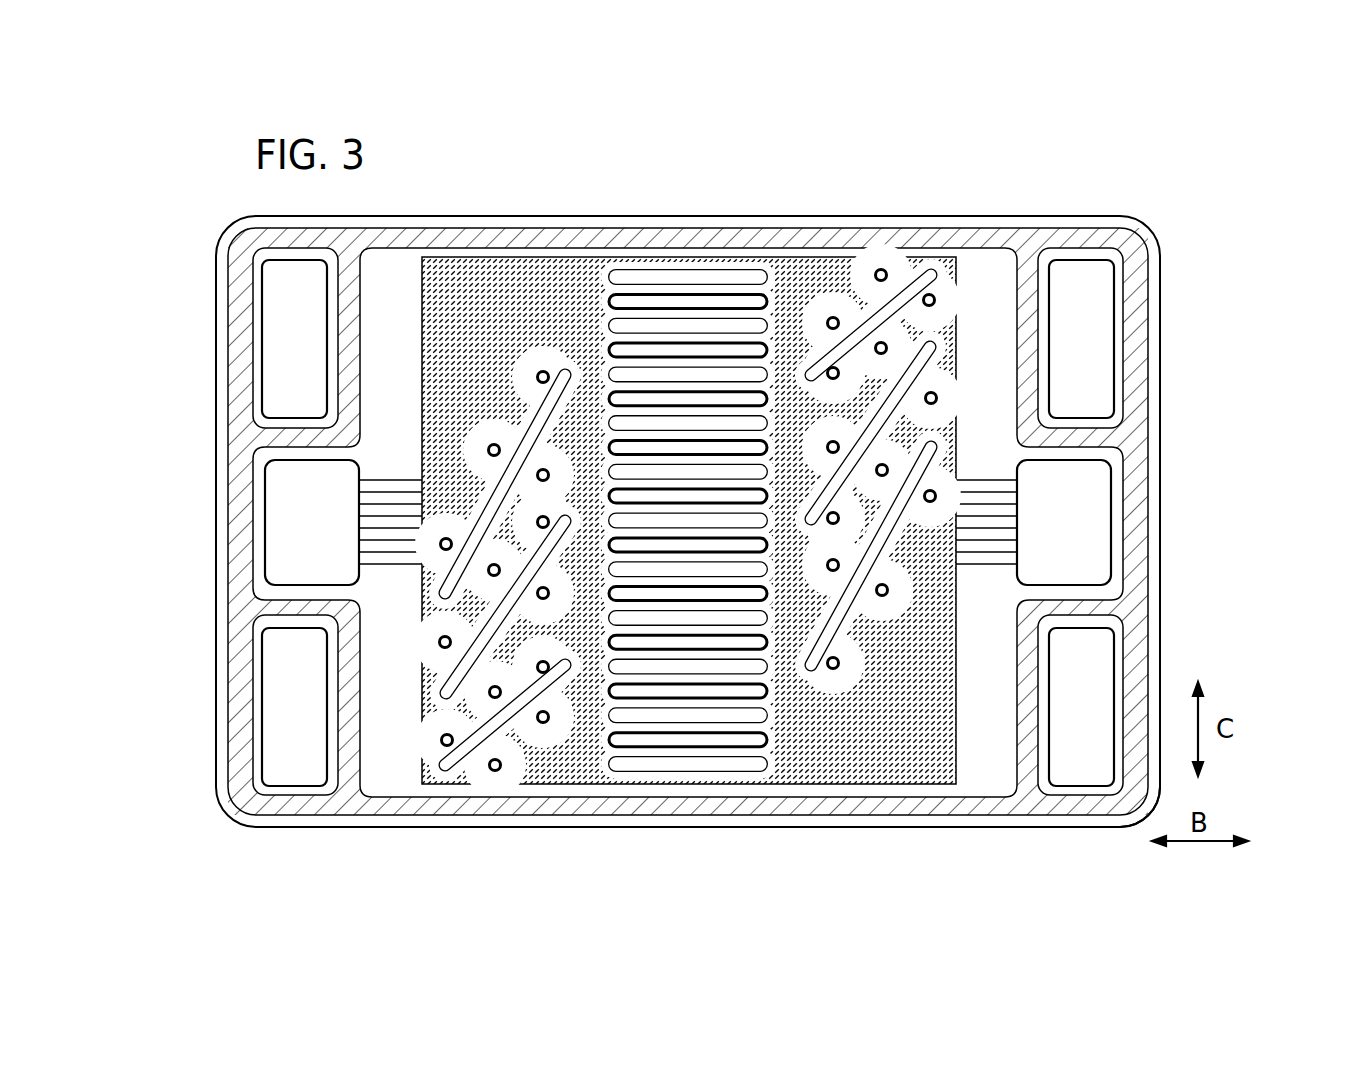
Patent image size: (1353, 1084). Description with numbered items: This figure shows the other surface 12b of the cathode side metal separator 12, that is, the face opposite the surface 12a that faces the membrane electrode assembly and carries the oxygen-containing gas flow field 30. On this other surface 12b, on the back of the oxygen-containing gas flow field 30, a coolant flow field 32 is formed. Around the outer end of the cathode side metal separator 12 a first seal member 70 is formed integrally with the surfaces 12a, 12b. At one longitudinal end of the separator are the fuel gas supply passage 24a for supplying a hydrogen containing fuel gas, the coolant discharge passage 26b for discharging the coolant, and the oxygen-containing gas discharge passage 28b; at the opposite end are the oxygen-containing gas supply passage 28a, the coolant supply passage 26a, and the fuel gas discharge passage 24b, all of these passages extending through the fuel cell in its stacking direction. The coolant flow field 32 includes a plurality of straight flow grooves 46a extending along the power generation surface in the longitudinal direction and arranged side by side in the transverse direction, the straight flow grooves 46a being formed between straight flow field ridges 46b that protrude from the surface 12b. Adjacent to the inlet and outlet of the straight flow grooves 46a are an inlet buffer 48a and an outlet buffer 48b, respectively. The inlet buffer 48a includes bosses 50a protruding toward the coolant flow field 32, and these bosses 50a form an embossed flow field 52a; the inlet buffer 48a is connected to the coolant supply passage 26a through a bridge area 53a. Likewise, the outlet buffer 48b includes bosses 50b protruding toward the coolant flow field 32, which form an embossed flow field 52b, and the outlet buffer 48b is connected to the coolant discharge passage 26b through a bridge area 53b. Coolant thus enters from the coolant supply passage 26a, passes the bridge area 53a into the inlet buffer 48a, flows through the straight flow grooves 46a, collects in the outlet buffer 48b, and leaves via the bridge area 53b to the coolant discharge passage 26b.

The cathode side metal separator 12 is at (1062, 166).
The surface 12a is at (1068, 822).
The other surface 12b is at (1020, 822).
The first seal member 70 is at (1098, 235).
The fuel gas supply passage 24a is at (295, 338).
The fuel gas discharge passage 24b is at (1080, 705).
The oxygen-containing gas supply passage 28a is at (1080, 338).
The oxygen-containing gas discharge passage 28b is at (295, 705).
The coolant supply passage 26a is at (1075, 510).
The coolant discharge passage 26b is at (285, 546).
The oxygen-containing gas flow field 30 is at (657, 524).
The coolant flow field 32 is at (642, 278).
The straight flow grooves 46a is at (740, 764).
The straight flow field ridges 46b is at (650, 741).
The inlet buffer 48a is at (882, 752).
The outlet buffer 48b is at (455, 291).
The bosses 50a is at (890, 273).
The bosses 50b is at (488, 772).
The embossed flow field 52a is at (862, 518).
The embossed flow field 52b is at (512, 520).
The bridge area 53a is at (990, 492).
The bridge area 53b is at (386, 548).